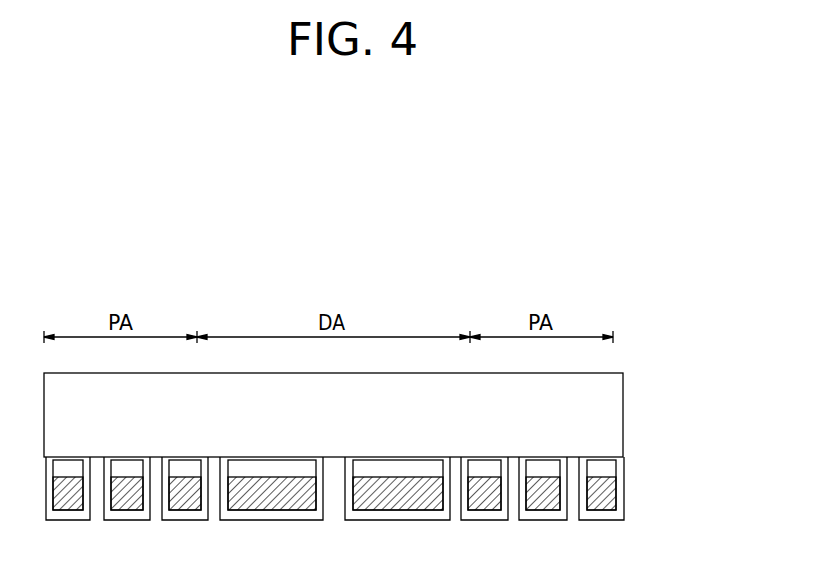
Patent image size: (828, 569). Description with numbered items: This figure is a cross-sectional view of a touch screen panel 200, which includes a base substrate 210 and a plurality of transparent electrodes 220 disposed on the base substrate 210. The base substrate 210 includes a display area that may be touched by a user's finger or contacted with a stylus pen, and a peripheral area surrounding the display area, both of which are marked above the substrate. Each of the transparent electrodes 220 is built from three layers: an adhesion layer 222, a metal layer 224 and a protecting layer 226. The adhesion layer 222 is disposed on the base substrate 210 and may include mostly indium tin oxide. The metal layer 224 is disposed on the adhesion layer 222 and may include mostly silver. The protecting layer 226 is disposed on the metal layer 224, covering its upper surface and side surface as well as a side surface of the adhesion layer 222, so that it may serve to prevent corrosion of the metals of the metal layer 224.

The touch screen panel 200 is at (353, 211).
The base substrate 210 is at (615, 412).
The transparent electrodes 220 is at (403, 493).
The adhesion layer 222 is at (608, 463).
The metal layer 224 is at (612, 490).
The protecting layer 226 is at (620, 505).